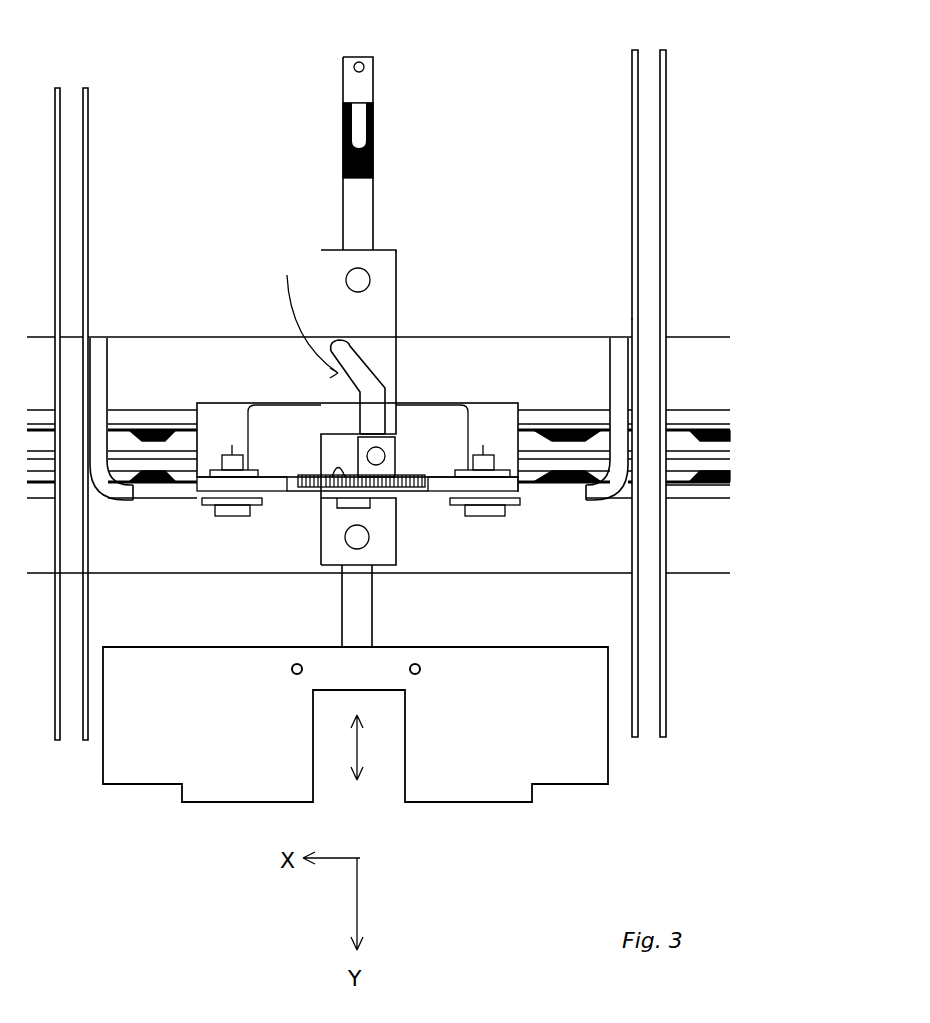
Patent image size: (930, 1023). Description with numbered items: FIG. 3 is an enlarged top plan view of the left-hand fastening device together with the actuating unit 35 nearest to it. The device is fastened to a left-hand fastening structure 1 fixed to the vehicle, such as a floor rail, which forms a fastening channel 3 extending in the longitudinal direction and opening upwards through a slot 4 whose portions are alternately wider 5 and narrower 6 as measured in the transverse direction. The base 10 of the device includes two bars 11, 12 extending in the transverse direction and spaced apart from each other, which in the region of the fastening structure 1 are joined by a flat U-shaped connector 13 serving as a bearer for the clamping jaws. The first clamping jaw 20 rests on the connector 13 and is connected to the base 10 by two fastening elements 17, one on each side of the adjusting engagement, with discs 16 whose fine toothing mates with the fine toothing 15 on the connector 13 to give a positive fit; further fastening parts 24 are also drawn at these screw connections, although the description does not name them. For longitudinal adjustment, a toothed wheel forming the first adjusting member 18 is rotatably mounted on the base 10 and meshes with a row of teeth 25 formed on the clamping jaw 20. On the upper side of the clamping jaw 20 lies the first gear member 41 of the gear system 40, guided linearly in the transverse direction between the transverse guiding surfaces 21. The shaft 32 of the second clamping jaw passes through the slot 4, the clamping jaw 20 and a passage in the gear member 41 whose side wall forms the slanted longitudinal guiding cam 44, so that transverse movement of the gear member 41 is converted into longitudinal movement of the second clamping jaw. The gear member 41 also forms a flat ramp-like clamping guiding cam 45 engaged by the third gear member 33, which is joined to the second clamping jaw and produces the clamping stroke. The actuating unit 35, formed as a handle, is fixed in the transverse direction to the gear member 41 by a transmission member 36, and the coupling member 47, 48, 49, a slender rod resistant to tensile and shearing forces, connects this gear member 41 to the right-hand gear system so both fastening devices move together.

The left-hand fastening structure 1 is at (730, 573).
The fastening channel 3 is at (746, 449).
The slot 4 is at (718, 437).
The wider slot portions 5 is at (681, 480).
The narrower slot portions 6 is at (718, 485).
The base 10 is at (618, 302).
The bar 11 is at (652, 140).
The bar 12 is at (85, 160).
The connector 13 is at (668, 335).
The fine toothing 15 is at (188, 502).
The discs 16 is at (210, 503).
The fastening elements 17 is at (236, 514).
The first adjusting member 18 is at (345, 503).
The first clamping jaw 20 is at (225, 422).
The transverse guide 21 is at (200, 408).
The fastening screw 24 is at (190, 500).
The row of teeth 25 is at (398, 500).
The shaft 32 is at (388, 466).
The third gear member 33 is at (382, 458).
The actuating unit 35 is at (197, 752).
The transmission member 36 is at (352, 605).
The gear system 40 is at (495, 273).
The first gear member 41 is at (398, 300).
The longitudinal guiding cam 44 is at (359, 331).
The clamping guiding cam 45 is at (318, 373).
The coupling member 47 is at (370, 204).
The coupling member 48 is at (366, 68).
The coupling member 49 is at (368, 88).